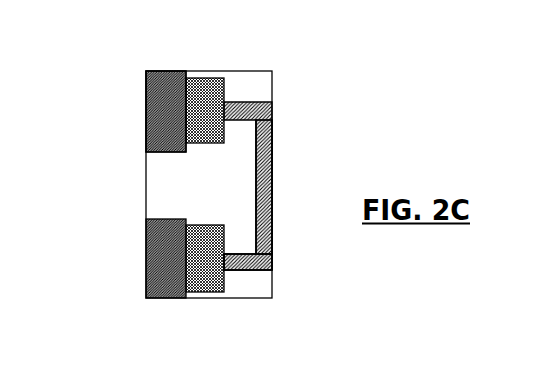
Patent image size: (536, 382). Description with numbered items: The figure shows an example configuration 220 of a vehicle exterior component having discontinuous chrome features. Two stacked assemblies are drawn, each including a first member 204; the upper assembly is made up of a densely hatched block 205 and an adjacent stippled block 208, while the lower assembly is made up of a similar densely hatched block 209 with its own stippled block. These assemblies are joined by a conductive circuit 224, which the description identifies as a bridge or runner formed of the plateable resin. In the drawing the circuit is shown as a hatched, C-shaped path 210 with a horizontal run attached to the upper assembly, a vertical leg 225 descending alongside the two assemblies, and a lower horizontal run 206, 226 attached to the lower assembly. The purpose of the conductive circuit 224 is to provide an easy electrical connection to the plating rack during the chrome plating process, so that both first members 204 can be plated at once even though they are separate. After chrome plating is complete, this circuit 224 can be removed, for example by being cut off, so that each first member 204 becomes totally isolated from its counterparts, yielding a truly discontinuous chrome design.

The first member 204 is at (166, 58).
The magnet 205 is at (146, 110).
The pole piece 208 is at (204, 60).
The magnet 209 is at (186, 298).
The yoke 210 is at (224, 89).
The example configuration 220 is at (402, 87).
The conductive circuit 224 is at (290, 183).
The yoke section 225 is at (256, 203).
The yoke section 206 is at (272, 255).
The yoke section 226 is at (248, 262).